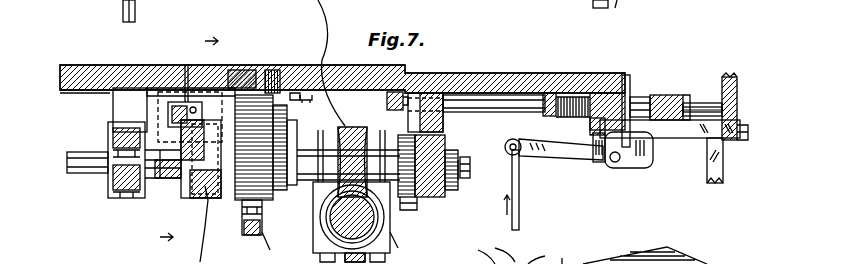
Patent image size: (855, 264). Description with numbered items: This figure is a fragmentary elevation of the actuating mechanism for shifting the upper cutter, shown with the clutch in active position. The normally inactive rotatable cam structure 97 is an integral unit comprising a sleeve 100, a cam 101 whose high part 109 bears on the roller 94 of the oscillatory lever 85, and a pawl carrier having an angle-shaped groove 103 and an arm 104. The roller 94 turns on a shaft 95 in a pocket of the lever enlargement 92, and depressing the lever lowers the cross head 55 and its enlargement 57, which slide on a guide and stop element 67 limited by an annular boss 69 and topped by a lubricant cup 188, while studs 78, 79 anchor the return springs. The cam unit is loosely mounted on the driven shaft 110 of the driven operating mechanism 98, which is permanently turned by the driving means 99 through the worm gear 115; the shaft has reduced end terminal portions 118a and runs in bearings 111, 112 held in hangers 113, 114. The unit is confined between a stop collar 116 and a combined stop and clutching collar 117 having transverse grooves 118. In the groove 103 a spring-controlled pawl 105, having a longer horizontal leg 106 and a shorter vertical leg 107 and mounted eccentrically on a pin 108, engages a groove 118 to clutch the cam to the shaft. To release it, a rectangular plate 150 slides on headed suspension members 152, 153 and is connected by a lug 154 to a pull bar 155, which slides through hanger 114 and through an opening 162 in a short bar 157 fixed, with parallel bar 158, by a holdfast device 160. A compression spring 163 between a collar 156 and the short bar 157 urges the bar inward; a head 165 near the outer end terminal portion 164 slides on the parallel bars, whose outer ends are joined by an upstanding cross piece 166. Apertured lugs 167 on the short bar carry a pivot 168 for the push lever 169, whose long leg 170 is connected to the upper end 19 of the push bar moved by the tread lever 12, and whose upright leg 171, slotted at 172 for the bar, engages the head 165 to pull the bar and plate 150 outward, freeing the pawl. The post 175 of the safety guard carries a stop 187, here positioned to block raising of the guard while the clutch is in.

The tread lever 12 is at (202, 138).
The upper end of push bar 19 is at (512, 139).
The cross head 55 is at (470, 253).
The oval-shaped enlargement 57 is at (493, 247).
The combined guide and stop element 67 is at (566, 253).
The annular boss 69 is at (645, 251).
The stud 78 is at (205, 62).
The stud 79 is at (615, 11).
The oscillatory lever 85 is at (267, 247).
The enlargement 92 is at (262, 229).
The roller 94 is at (252, 196).
The shaft 95 is at (262, 217).
The rotatable cam structure 97 is at (254, 147).
The driven operating mechanism 98 is at (304, 147).
The driving means 99 is at (338, 224).
The sleeve 100 is at (226, 224).
The cam 101 is at (308, 90).
The angle-shaped groove 103 is at (186, 198).
The arm 104 is at (271, 68).
The clutching member or pawl 105 is at (154, 110).
The horizontal leg 106 is at (183, 86).
The vertical leg 107 is at (150, 117).
The pin 108 is at (188, 64).
The high part of cam 109 is at (247, 75).
The driven shaft 110 is at (373, 166).
The bearing 111 is at (108, 183).
The bearing 112 is at (456, 188).
The hanger 113 is at (110, 87).
The hanger 114 is at (533, 72).
The worm gear 115 is at (378, 128).
The stop collar 116 is at (306, 106).
The combined stop and clutching collar 117 is at (170, 182).
The transverse groove 118 is at (165, 164).
The reduced end terminal portion 118a is at (64, 148).
The rectangular plate 150 is at (405, 92).
The headed suspension member 152 is at (265, 147).
The headed suspension member 153 is at (342, 138).
The lug 154 is at (390, 91).
The pull bar or rod 155 is at (548, 93).
The collar 156 is at (558, 95).
The short bar 157 is at (636, 96).
The parallel bar 158 is at (598, 150).
The holdfast device 160 is at (625, 92).
The opening 162 is at (590, 130).
The compression spring 163 is at (578, 93).
The outer end terminal portion 164 is at (697, 106).
The head 165 is at (686, 94).
The upstanding cross piece 166 is at (737, 100).
The apertured lug 167 is at (617, 162).
The pivot 168 is at (652, 152).
The push lever 169 is at (577, 158).
The leg 170 is at (548, 157).
The leg 171 is at (652, 150).
The slot 172 is at (646, 100).
The post 175 is at (650, 130).
The stop 187 is at (724, 158).
The lubricant cup 188 is at (525, 250).